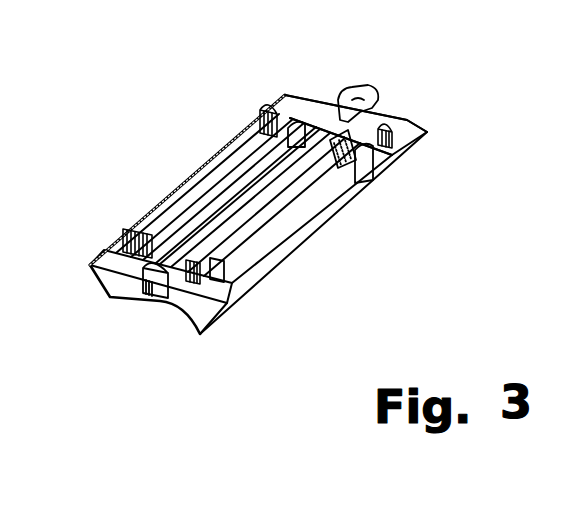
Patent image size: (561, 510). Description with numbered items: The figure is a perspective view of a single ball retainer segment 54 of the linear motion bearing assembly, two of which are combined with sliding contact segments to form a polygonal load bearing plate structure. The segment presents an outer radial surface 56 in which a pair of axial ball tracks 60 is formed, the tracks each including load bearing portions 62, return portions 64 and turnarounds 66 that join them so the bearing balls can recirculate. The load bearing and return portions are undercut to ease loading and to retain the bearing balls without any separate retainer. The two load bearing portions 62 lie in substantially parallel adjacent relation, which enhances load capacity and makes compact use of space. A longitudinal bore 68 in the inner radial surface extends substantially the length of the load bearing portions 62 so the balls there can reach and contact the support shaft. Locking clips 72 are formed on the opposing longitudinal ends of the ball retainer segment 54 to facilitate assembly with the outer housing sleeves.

The ball retainer segment 54 is at (214, 306).
The outer radial surface 56 is at (292, 95).
The axial ball tracks 60 is at (195, 195).
The load bearing portions 62 is at (240, 168).
The return portions 64 is at (258, 130).
The turnarounds 66 is at (143, 232).
The longitudinal bore 68 is at (342, 114).
The locking clips 72 is at (378, 98).